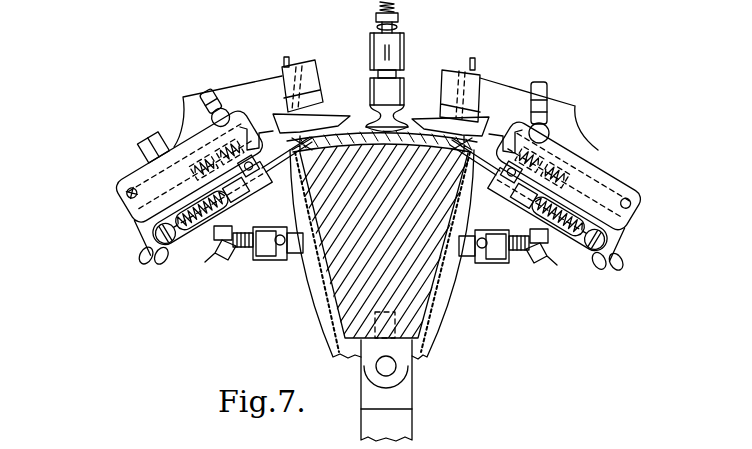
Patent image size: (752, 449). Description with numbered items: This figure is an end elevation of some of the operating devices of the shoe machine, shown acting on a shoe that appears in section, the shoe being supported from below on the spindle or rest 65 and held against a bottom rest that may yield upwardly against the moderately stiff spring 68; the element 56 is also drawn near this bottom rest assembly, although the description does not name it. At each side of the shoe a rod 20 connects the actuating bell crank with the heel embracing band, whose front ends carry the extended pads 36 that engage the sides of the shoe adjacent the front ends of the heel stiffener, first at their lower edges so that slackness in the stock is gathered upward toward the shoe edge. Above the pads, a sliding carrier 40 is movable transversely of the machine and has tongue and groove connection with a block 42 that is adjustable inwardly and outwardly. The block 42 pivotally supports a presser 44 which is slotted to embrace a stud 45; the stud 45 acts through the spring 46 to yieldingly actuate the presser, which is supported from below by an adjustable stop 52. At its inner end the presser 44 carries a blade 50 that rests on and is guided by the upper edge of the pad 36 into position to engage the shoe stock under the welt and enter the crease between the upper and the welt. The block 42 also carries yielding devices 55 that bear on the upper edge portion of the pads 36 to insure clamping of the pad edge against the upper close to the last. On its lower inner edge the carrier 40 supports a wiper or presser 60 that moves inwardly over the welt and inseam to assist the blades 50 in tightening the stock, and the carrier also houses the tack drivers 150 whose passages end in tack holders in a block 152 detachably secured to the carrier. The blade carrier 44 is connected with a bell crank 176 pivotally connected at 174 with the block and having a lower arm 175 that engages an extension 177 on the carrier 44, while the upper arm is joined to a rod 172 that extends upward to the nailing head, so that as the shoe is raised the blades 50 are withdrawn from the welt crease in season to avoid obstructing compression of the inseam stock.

The rod 20 is at (515, 254).
The extended pads 36 is at (452, 257).
The sliding carrier 40 is at (196, 97).
The block 42 is at (157, 212).
The presser 44 is at (188, 244).
The stud 45 is at (614, 251).
The spring 46 is at (196, 246).
The blade 50 is at (497, 138).
The adjustable stop 52 is at (534, 263).
The yielding devices 55 is at (545, 105).
The plunger 56 is at (407, 80).
The wiper or presser 60 is at (483, 140).
The spindle or rest 65 is at (405, 415).
The spring 68 is at (388, 5).
The drivers 150 is at (458, 95).
The block 152 is at (470, 112).
The rod 172 is at (207, 107).
The pivot 174 is at (117, 185).
The lower arm 175 is at (157, 262).
The bell crank 176 is at (137, 168).
The extension 177 is at (140, 256).